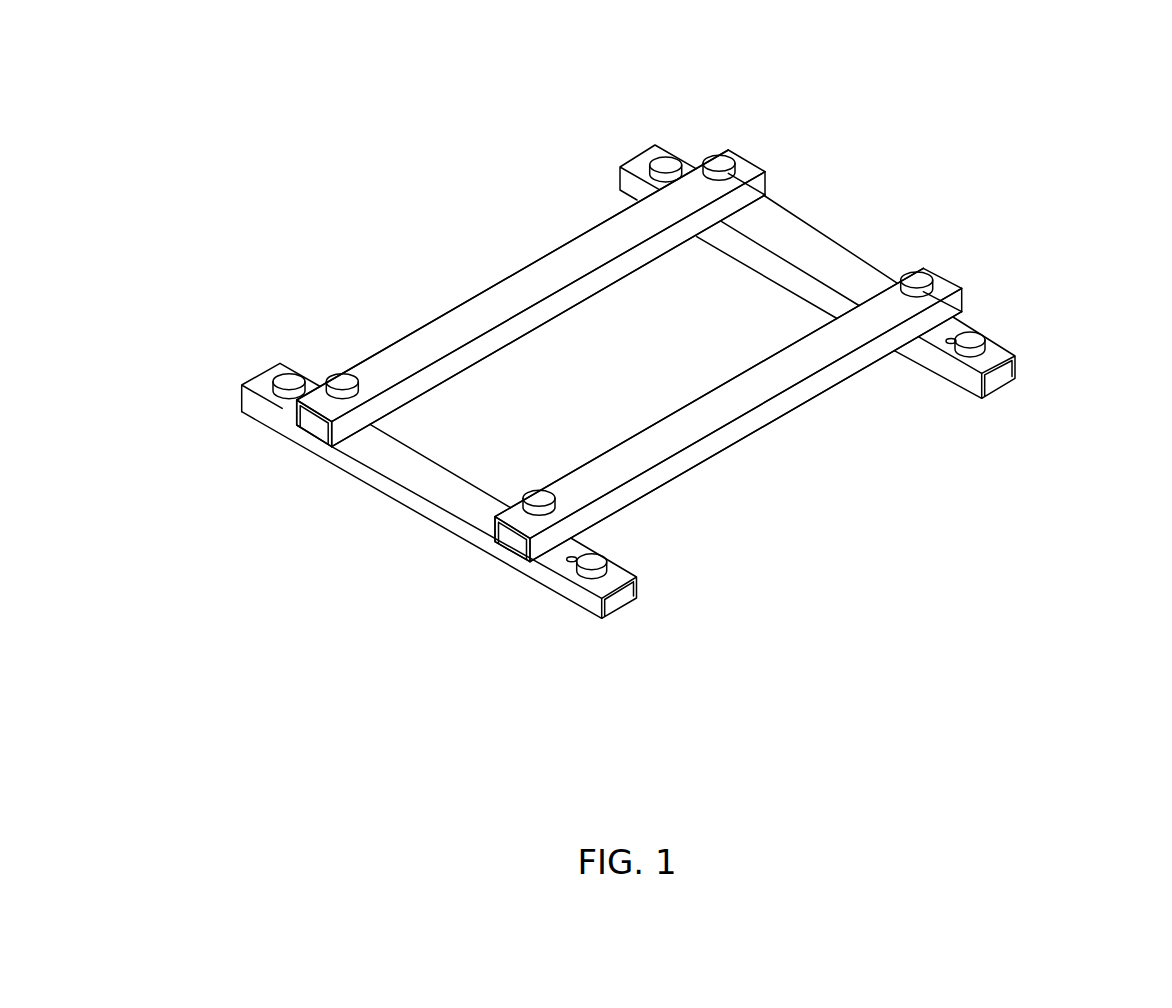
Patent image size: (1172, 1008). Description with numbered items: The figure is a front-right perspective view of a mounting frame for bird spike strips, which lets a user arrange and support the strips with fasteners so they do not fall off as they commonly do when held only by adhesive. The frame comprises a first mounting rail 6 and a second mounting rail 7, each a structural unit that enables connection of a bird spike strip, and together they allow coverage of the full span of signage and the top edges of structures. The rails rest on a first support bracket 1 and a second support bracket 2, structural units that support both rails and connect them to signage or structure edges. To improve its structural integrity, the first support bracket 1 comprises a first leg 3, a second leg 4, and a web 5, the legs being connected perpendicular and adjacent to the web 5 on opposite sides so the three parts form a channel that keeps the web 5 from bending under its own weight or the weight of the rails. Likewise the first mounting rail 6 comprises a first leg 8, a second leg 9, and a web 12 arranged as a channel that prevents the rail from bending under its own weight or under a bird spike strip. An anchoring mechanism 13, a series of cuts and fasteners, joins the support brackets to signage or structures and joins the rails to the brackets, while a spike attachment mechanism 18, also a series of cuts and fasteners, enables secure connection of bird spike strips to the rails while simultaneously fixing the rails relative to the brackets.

The first support bracket 1 is at (625, 389).
The second support bracket 2 is at (728, 263).
The first leg 3 is at (575, 593).
The second leg 4 is at (638, 590).
The web 5 is at (612, 380).
The first mounting rail 6 is at (562, 225).
The second mounting rail 7 is at (662, 403).
The first leg 8 is at (540, 315).
The second leg 9 is at (297, 423).
The web 12 is at (447, 327).
The anchoring mechanism 13 is at (672, 128).
The spike attachment mechanism 18 is at (742, 130).